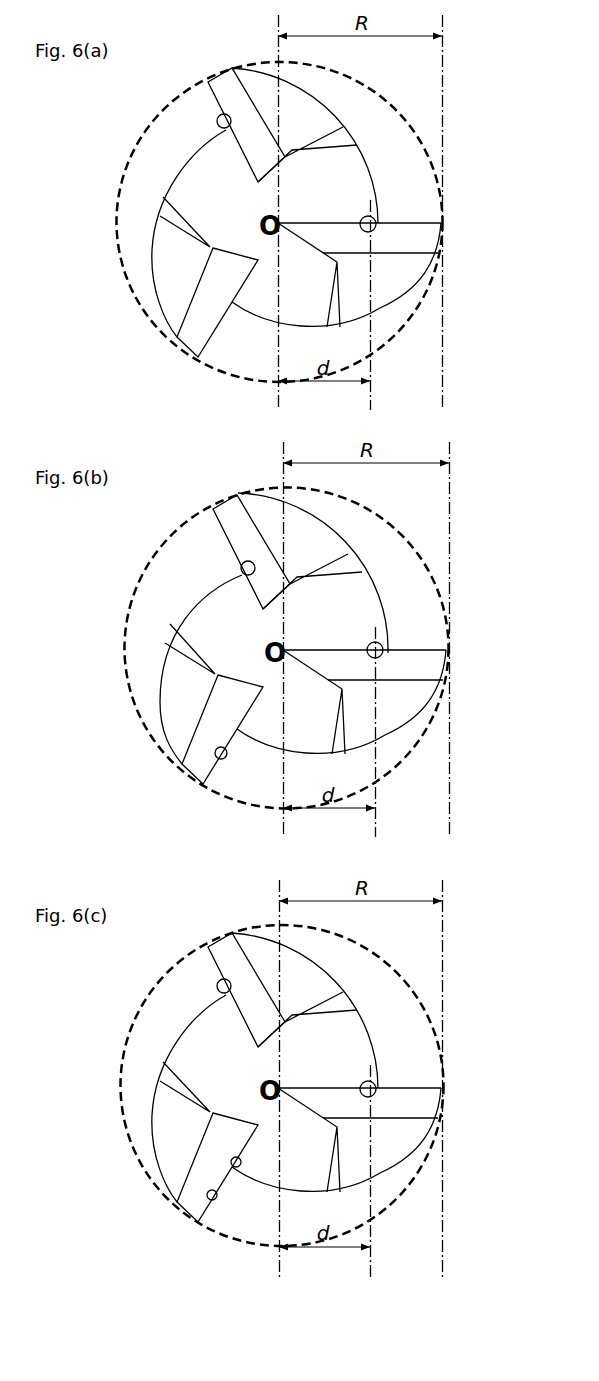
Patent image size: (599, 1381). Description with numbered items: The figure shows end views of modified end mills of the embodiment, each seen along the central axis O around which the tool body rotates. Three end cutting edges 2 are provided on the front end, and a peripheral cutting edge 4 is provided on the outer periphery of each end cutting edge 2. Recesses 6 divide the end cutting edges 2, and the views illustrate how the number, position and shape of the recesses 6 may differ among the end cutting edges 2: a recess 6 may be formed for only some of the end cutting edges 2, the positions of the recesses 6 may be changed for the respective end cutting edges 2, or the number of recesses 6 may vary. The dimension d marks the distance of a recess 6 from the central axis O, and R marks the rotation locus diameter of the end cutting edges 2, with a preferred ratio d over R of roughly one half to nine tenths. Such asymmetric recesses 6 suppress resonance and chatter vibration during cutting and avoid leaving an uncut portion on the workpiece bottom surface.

In FIG. 6A, the end cutting edge 2 is at (214, 96).
In FIG. 6B, the end cutting edge 2 is at (320, 670).
In FIG. 6C, the end cutting edge 2 is at (315, 1108).
In FIG. 6A, the peripheral cutting edge 4 is at (214, 80).
In FIG. 6B, the peripheral cutting edge 4 is at (328, 654).
In FIG. 6C, the peripheral cutting edge 4 is at (322, 1092).
In FIG. 6A, the recess 6 is at (219, 119).
In FIG. 6B, the recess 6 is at (262, 680).
In FIG. 6C, the recess 6 is at (257, 1121).